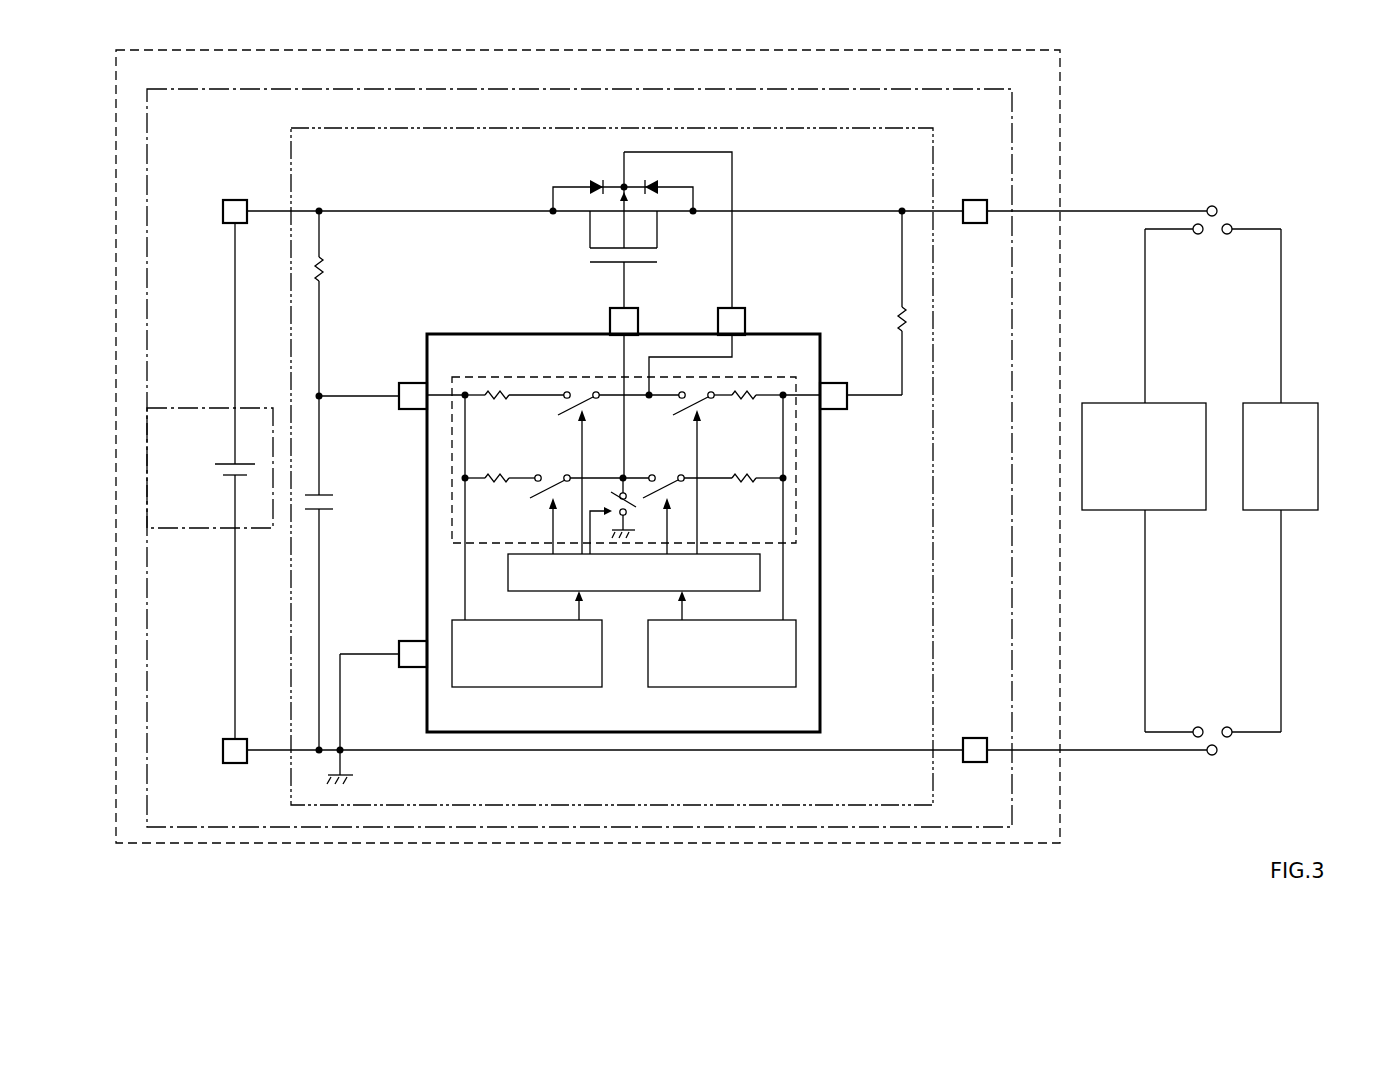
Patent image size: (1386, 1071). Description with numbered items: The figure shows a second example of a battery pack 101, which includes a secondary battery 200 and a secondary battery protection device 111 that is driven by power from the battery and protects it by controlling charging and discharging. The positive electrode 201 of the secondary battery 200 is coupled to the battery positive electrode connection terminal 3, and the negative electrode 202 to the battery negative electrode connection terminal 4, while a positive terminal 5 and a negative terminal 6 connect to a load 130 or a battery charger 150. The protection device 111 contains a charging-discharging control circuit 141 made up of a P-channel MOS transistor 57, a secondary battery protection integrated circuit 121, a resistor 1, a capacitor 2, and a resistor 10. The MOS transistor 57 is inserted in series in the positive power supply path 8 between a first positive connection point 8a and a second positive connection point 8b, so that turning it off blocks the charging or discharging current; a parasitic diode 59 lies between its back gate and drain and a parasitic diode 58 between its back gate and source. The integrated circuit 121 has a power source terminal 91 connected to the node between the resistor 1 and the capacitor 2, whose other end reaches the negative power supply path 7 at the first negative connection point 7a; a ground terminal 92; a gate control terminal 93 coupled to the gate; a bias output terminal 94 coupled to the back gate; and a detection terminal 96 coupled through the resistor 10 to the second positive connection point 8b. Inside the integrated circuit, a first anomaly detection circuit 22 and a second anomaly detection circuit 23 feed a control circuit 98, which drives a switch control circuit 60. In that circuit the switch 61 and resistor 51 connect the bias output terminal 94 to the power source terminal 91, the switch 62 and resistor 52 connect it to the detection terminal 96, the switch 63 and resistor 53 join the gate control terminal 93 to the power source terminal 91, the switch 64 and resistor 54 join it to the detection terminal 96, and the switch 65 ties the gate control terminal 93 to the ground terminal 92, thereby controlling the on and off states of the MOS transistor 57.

The battery pack 101 is at (1060, 70).
The secondary battery protection device 111 is at (809, 89).
The charging-discharging control circuit 141 is at (760, 128).
The secondary battery protection integrated circuit 121 is at (470, 334).
The battery positive electrode connection terminal 3 is at (235, 200).
The battery negative electrode connection terminal 4 is at (235, 763).
The positive terminal 5 is at (975, 200).
The negative terminal 6 is at (975, 738).
The positive power supply path 8 is at (428, 212).
The first positive connection point 8a is at (322, 213).
The second positive connection point 8b is at (900, 213).
The negative power supply path 7 is at (365, 749).
The first negative connection point 7a is at (345, 756).
The resistor 1 is at (325, 268).
The capacitor 2 is at (322, 495).
The resistor 10 is at (899, 306).
The MOS transistor 57 is at (657, 250).
The parasitic diode 58 is at (646, 182).
The parasitic diode 59 is at (589, 182).
The switch control circuit 60 is at (523, 377).
The power source terminal 91 is at (403, 410).
The ground terminal 92 is at (403, 641).
The gate control terminal 93 is at (640, 327).
The bias output terminal 94 is at (746, 327).
The detection terminal 96 is at (830, 410).
The control circuit 98 is at (710, 592).
The first anomaly detection circuit 22 is at (535, 688).
The second anomaly detection circuit 23 is at (733, 688).
The resistor 51 is at (490, 398).
The resistor 52 is at (750, 398).
The resistor 53 is at (490, 481).
The resistor 54 is at (750, 481).
The switch 61 is at (597, 399).
The switch 62 is at (711, 399).
The switch 63 is at (560, 473).
The switch 64 is at (672, 473).
The switch 65 is at (637, 507).
The battery charger 150 is at (1157, 403).
The load 130 is at (1293, 403).
The secondary battery 200 is at (210, 481).
The positive electrode 201 is at (230, 462).
The negative electrode 202 is at (230, 478).